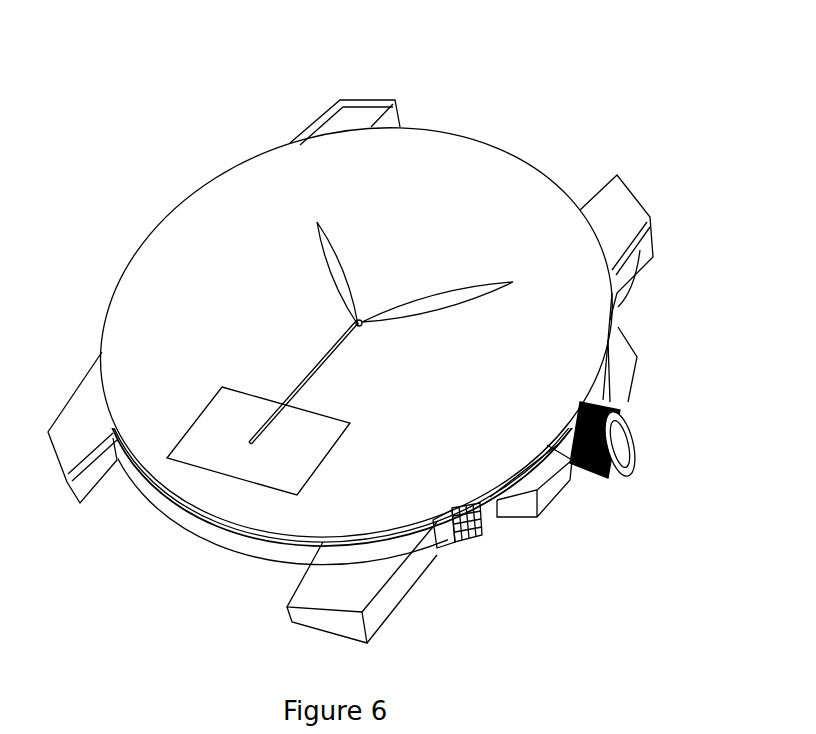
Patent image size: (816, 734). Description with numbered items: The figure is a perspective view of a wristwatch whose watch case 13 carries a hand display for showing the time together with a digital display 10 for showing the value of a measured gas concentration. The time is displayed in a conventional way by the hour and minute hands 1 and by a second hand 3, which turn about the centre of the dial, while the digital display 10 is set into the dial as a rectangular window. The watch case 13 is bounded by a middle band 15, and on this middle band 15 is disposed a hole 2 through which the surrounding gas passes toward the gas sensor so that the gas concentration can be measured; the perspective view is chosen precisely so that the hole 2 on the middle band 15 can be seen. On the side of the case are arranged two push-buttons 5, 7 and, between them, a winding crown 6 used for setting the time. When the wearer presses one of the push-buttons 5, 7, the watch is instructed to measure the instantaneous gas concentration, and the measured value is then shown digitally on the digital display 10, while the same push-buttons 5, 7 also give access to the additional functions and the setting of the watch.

The hour and minute hands 1 is at (335, 273).
The hole 2 is at (473, 537).
The second hand 3 is at (293, 390).
The push-button 5 is at (628, 358).
The winding crown 6 is at (622, 447).
The push-button 7 is at (547, 493).
The digital display 10 is at (215, 455).
The watch case 13 is at (215, 523).
The middle band 15 is at (443, 527).